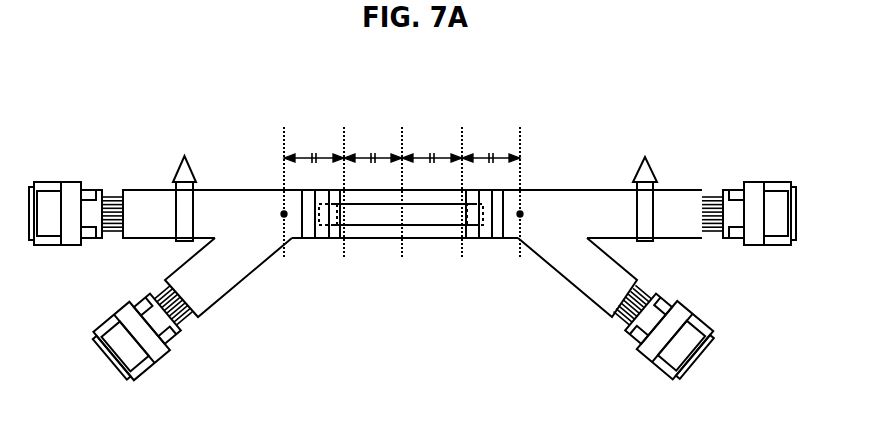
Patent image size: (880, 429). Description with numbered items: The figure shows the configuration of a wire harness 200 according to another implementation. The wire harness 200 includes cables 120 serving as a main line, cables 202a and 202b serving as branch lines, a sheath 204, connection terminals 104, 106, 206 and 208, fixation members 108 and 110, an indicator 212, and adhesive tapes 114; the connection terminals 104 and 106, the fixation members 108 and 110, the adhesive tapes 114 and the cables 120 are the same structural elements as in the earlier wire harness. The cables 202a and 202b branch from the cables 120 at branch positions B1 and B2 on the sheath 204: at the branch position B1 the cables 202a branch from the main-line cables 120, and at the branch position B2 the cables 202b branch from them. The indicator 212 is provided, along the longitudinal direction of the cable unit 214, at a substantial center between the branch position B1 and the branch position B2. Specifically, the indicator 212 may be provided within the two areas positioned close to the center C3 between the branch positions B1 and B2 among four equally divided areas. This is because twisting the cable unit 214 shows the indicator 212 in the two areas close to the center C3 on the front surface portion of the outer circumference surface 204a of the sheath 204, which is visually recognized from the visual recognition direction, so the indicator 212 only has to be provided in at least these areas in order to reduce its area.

The wire harness 200 is at (724, 125).
The cable unit 214 is at (158, 84).
The cables 120 is at (112, 188).
The sheath 204 is at (162, 212).
The outer circumference surface 204a is at (248, 190).
The adhesive tapes 114 is at (485, 193).
The connection terminal 106 is at (73, 235).
The fixation member 110 is at (185, 240).
The fixation member 108 is at (644, 236).
The connection terminal 104 is at (755, 238).
The connection terminal 208 is at (125, 350).
The cables 202b is at (183, 323).
The connection terminal 206 is at (683, 352).
The cables 202a is at (620, 327).
The indicator 212 is at (375, 215).
The center C3 is at (406, 204).
The branch position B2 is at (284, 217).
The branch position B1 is at (520, 217).